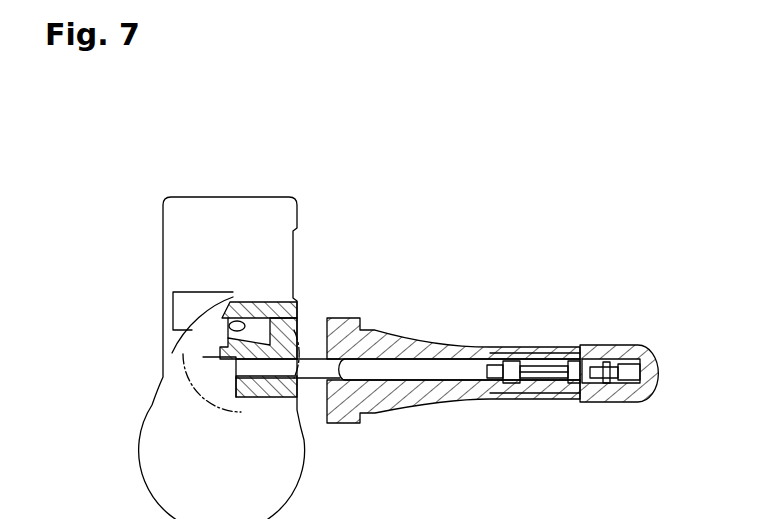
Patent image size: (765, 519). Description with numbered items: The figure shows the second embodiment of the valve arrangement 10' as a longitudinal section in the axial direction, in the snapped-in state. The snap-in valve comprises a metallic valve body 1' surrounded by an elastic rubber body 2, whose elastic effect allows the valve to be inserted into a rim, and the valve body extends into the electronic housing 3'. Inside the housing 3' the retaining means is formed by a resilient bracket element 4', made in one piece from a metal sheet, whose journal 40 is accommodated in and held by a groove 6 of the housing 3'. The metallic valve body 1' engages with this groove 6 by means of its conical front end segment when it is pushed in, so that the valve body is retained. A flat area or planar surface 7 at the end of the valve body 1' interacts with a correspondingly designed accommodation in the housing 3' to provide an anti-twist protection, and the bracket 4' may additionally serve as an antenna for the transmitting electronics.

The housing 3' is at (222, 331).
The resilient bracket element 4' is at (256, 293).
The valve body 1' is at (408, 318).
The rubber body 2 is at (404, 334).
The groove 6 is at (262, 398).
The planar surface 7 is at (240, 390).
The valve arrangement 10' is at (532, 271).
The journal 40 is at (403, 510).